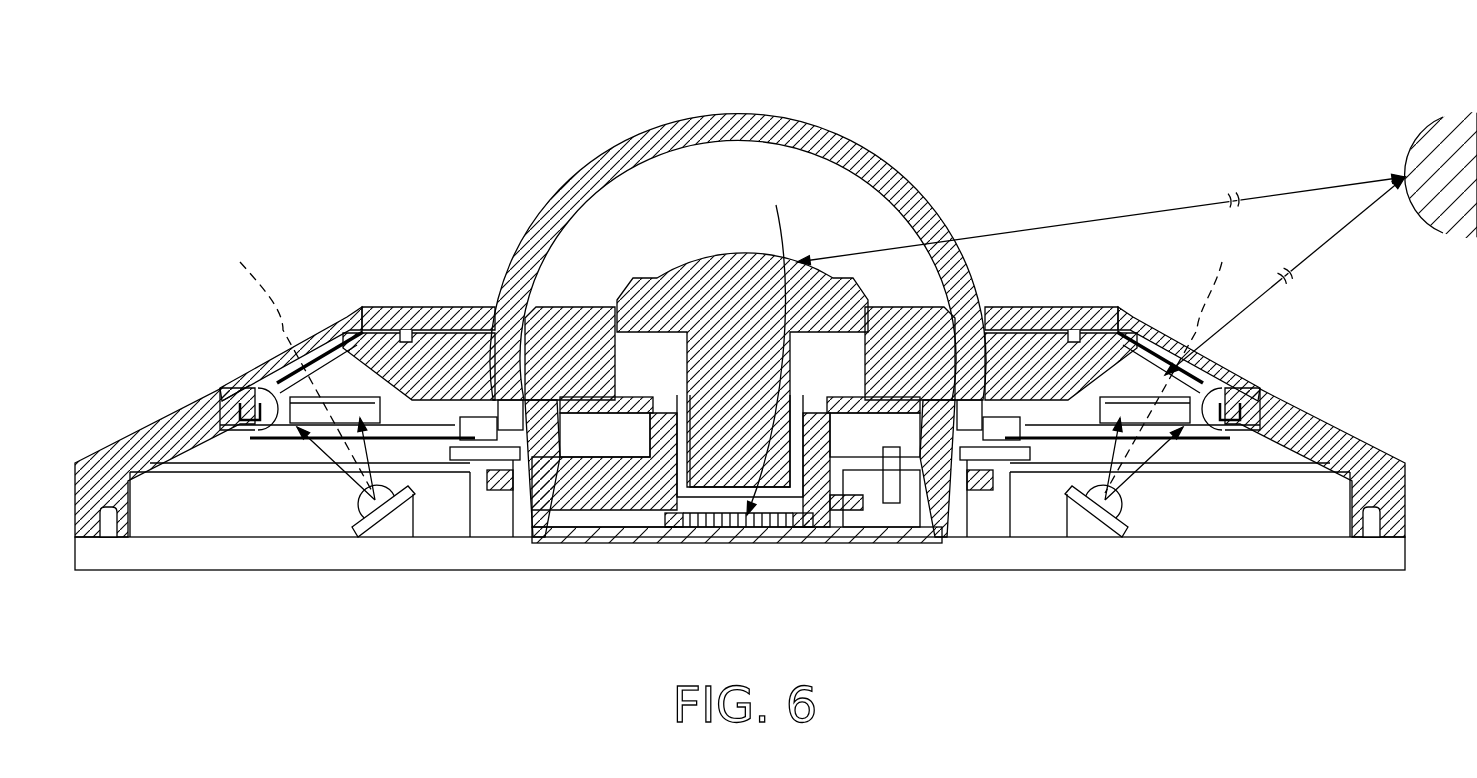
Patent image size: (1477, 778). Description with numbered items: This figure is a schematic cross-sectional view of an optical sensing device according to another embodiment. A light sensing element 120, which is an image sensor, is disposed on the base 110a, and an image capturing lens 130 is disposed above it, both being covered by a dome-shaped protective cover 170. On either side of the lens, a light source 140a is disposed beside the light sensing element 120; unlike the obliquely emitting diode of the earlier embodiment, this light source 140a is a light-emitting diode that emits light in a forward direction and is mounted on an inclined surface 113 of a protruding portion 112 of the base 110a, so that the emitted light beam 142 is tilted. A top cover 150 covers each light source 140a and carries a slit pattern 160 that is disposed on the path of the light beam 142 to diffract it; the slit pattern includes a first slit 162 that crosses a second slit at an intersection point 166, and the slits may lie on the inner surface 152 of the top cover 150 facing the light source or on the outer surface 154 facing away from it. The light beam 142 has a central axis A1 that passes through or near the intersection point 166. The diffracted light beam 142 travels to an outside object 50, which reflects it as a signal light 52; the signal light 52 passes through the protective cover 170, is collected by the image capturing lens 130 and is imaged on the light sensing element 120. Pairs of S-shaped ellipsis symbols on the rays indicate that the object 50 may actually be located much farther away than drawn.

The object 50 is at (1420, 140).
The signal light 52 is at (1190, 110).
The base 110a is at (1100, 548).
The protruding portion 112 is at (1070, 511).
The inclined surface 113 is at (1125, 522).
The light sensing element 120 is at (762, 527).
The image capturing lens 130 is at (742, 308).
The light source 140a is at (375, 508).
The light beam 142 is at (378, 447).
The top cover 150 is at (320, 343).
The inner surface 152 is at (255, 410).
The outer surface 154 is at (262, 358).
The slit pattern 160 is at (270, 380).
The first slit 162 is at (1170, 362).
The intersection point 166 is at (1173, 372).
The protective cover 170 is at (670, 135).
The central axis A1 is at (732, 362).